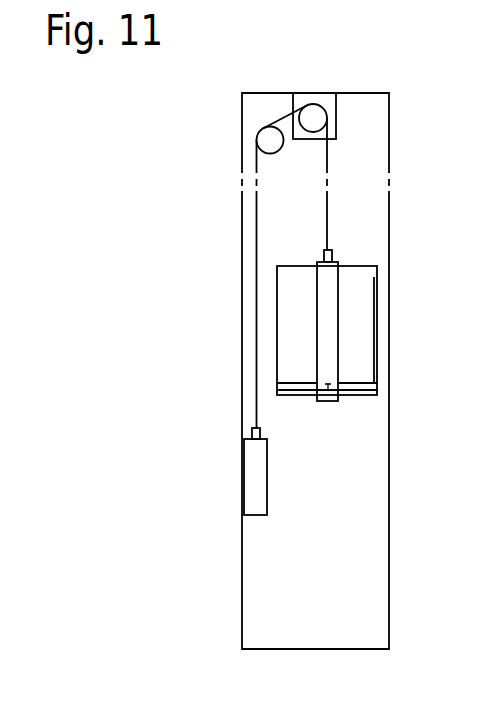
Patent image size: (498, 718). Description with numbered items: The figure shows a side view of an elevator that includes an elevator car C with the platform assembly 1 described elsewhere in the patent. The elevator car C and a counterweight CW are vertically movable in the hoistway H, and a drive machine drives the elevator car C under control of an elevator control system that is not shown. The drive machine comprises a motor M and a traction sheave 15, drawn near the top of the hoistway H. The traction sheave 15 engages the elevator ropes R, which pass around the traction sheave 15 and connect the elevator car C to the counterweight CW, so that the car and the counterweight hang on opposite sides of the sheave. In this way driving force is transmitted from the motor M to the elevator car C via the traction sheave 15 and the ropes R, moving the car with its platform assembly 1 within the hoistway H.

The traction sheave 15 is at (314, 112).
The motor M is at (336, 128).
The elevator ropes R is at (328, 212).
The elevator car C is at (292, 250).
The platform assembly 1 is at (301, 376).
The counterweight CW is at (249, 458).
The hoistway H is at (315, 371).